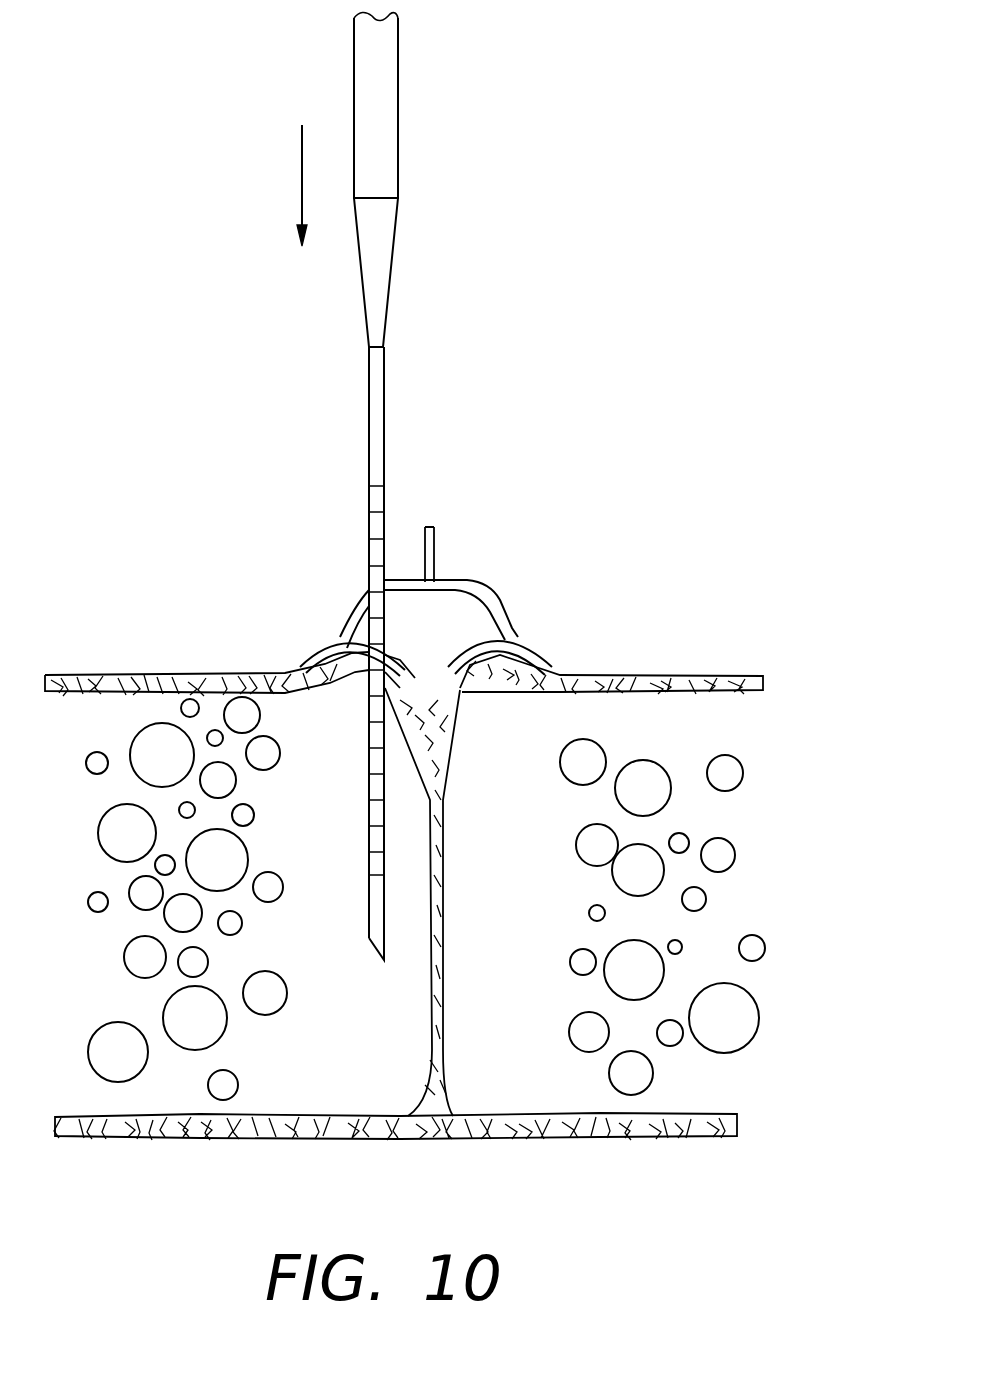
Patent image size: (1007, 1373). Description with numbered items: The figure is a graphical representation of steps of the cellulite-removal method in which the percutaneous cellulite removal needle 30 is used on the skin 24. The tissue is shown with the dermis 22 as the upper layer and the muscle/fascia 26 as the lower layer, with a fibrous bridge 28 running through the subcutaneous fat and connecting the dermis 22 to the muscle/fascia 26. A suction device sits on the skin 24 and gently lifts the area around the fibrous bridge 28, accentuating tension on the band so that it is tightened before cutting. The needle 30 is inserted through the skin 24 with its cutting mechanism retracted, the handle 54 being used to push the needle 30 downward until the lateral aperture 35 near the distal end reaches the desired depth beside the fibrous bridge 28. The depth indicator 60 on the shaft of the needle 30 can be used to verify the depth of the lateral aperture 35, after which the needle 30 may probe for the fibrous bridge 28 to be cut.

The handle 54 is at (388, 133).
The percutaneous cellulite removal needle 30 is at (368, 432).
The depth indicator 60 is at (368, 857).
The lateral aperture 35 is at (380, 910).
The dermis 22 is at (645, 672).
The skin 24 is at (762, 638).
The muscle/fascia 26 is at (580, 1138).
The fibrous bridge 28 is at (441, 800).